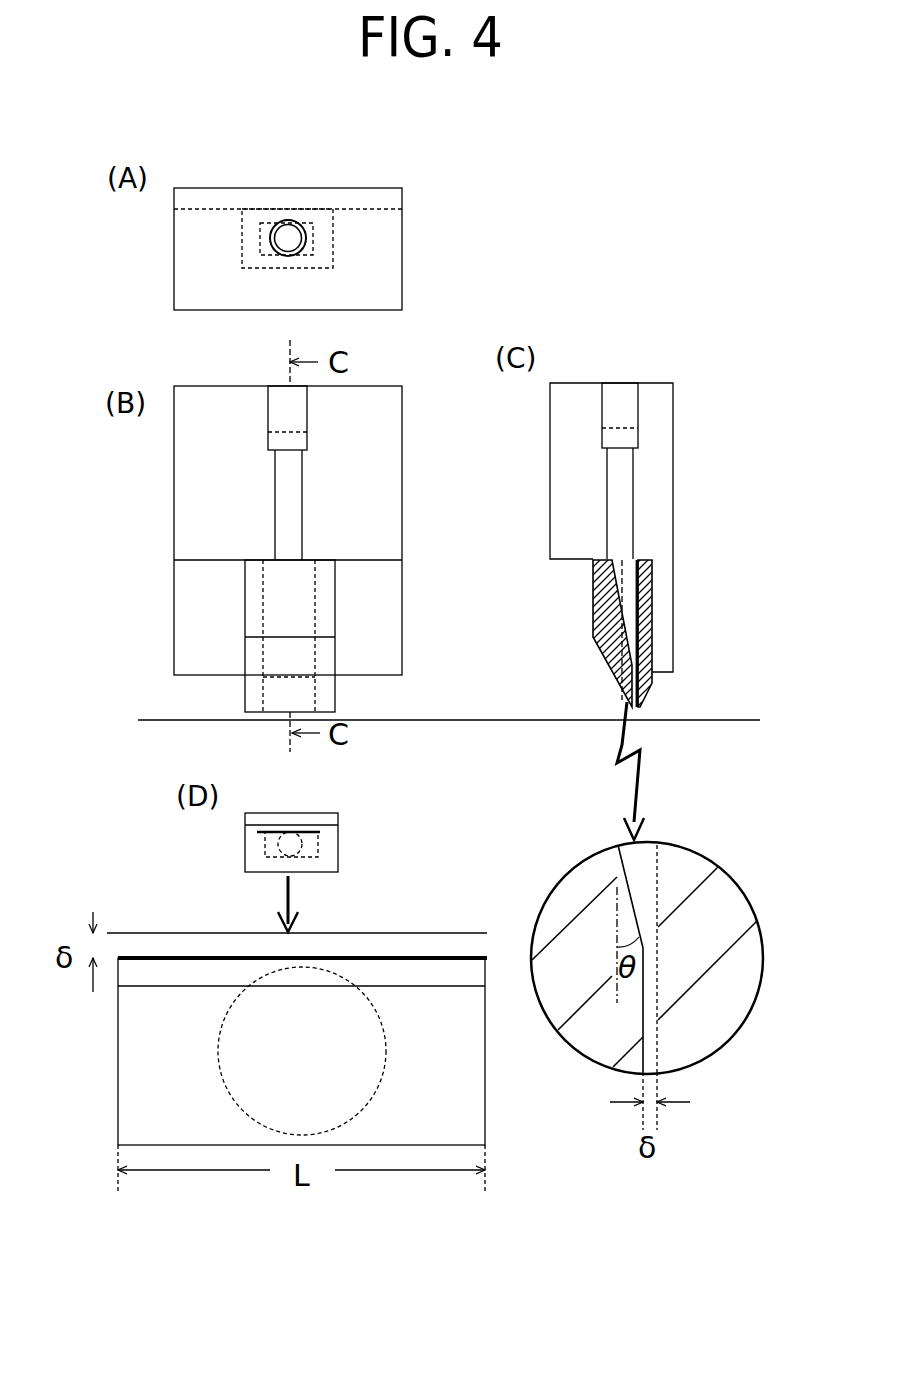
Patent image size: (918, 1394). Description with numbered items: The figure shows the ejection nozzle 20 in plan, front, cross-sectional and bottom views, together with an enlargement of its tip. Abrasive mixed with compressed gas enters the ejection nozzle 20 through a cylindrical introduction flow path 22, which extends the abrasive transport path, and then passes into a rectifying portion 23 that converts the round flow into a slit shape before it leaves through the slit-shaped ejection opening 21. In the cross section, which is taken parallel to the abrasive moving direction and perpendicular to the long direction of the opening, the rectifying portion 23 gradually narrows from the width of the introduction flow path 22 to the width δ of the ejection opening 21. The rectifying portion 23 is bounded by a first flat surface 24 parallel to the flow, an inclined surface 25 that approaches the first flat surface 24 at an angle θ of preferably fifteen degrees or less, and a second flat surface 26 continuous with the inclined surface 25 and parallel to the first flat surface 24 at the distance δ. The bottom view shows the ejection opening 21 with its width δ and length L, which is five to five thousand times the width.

The ejection nozzle 20 is at (303, 177).
The slit-shaped ejection opening 21 is at (275, 712).
The introduction flow path 22 is at (288, 238).
The rectifying portion 23 is at (315, 600).
The first flat surface 24 is at (640, 585).
The inclined surface 25 is at (595, 607).
The second flat surface 26 is at (648, 1007).